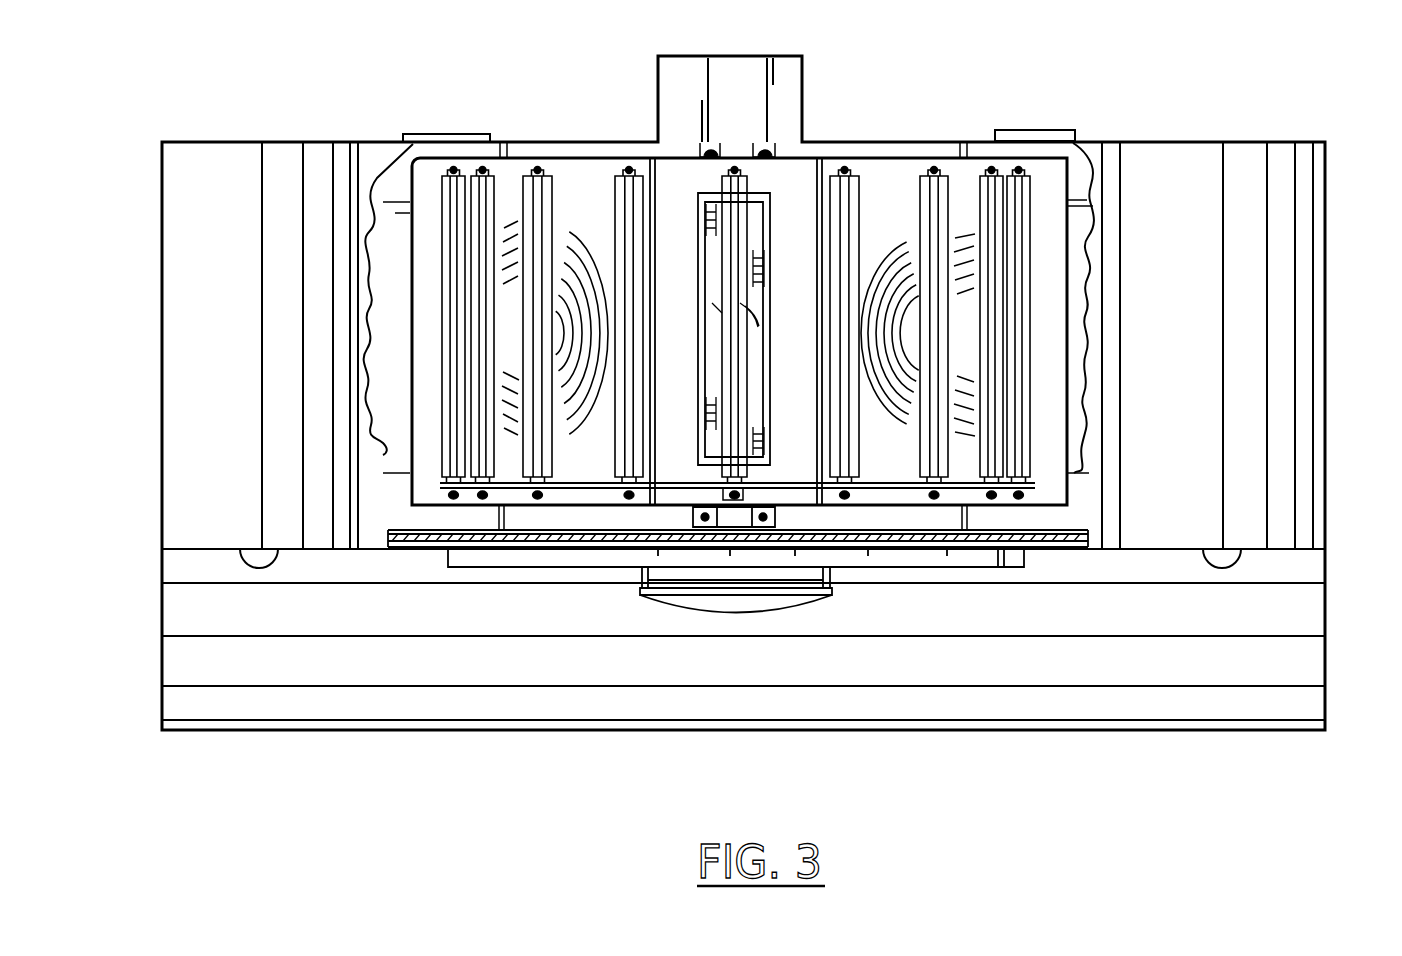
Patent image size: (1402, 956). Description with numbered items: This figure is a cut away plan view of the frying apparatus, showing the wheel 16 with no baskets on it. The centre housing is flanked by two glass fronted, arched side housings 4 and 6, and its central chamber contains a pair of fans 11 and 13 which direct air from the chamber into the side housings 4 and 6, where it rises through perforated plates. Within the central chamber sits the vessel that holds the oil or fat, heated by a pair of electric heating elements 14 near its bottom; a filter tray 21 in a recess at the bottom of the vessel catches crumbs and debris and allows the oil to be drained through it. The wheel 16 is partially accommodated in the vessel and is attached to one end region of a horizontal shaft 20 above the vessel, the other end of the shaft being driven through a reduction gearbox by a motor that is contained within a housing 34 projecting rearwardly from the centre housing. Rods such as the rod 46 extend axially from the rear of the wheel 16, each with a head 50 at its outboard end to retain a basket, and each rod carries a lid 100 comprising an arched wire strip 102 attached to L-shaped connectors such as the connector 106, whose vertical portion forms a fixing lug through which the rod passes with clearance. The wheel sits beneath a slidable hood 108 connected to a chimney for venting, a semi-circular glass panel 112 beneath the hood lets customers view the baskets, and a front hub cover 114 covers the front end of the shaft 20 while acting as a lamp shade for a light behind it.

The side housing 4 is at (173, 248).
The side housing 6 is at (1305, 228).
The fan 11 is at (450, 137).
The fan 13 is at (1042, 130).
The electric heating elements 14 is at (568, 253).
The wheel 16 is at (512, 490).
The horizontal shaft 20 is at (725, 163).
The filter tray 21 is at (707, 225).
The housing 34 is at (670, 67).
The rod 46 is at (937, 188).
The head 50 is at (934, 166).
The lid 100 is at (857, 411).
The arched strip 102 is at (887, 208).
The L-shaped connector 106 is at (927, 167).
The hood 108 is at (382, 163).
The semi-circular glass panel 112 is at (398, 553).
The front hub cover 114 is at (742, 603).